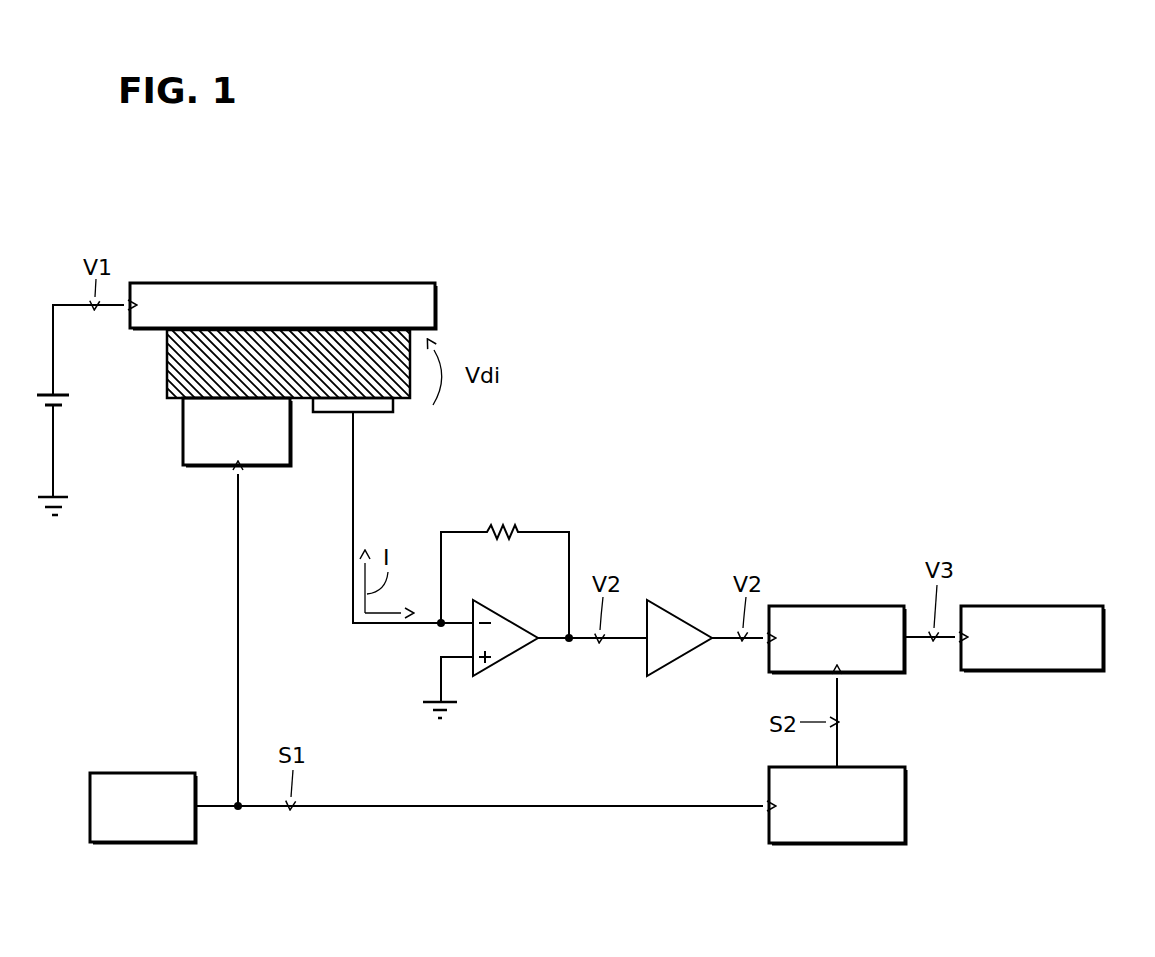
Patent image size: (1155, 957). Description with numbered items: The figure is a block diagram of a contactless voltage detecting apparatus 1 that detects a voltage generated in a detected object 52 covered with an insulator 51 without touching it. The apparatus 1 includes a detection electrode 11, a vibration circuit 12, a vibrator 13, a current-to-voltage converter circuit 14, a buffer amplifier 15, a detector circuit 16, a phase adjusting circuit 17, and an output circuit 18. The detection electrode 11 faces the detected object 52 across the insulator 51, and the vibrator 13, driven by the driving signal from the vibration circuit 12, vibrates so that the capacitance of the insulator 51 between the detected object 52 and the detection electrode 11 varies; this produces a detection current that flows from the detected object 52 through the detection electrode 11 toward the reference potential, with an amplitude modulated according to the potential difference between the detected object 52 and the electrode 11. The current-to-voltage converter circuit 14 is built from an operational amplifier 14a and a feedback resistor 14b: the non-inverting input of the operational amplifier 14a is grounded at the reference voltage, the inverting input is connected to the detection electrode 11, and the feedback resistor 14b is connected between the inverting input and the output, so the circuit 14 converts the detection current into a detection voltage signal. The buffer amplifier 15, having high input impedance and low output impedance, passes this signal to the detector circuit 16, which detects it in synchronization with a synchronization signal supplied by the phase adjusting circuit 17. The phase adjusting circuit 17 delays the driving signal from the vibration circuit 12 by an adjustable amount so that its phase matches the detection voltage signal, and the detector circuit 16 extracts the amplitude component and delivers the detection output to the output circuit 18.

The voltage detecting apparatus 1 is at (732, 272).
The detection electrode 11 is at (373, 413).
The vibration circuit 12 is at (160, 773).
The vibrator 13 is at (270, 466).
The current-to-voltage converter circuit 14 is at (498, 585).
The operational amplifier 14a is at (502, 616).
The feedback resistor 14b is at (437, 495).
The buffer amplifier 15 is at (675, 613).
The detector circuit 16 is at (857, 606).
The phase adjusting circuit 17 is at (857, 767).
The output circuit 18 is at (1078, 606).
The insulator 51 is at (167, 370).
The detected object 52 is at (163, 283).